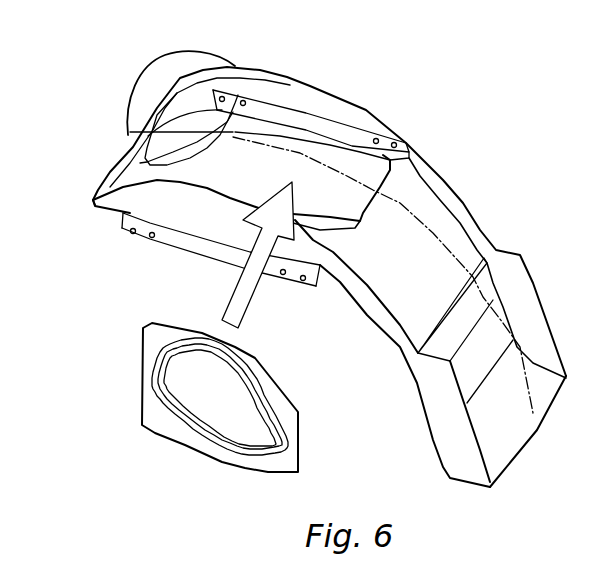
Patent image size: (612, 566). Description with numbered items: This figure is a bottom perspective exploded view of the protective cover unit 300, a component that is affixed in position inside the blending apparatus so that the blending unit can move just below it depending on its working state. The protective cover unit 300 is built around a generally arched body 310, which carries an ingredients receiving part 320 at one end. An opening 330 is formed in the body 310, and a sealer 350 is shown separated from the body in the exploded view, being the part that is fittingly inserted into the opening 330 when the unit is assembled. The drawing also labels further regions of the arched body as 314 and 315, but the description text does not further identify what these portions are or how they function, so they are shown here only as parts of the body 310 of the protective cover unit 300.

The protective cover unit 300 is at (448, 141).
The generally arched body 310 is at (480, 213).
The web portion 314 is at (118, 163).
The end leg portion 315 is at (523, 416).
The ingredients receiving part 320 is at (135, 72).
The opening 330 is at (353, 157).
The sealer 350 is at (145, 415).